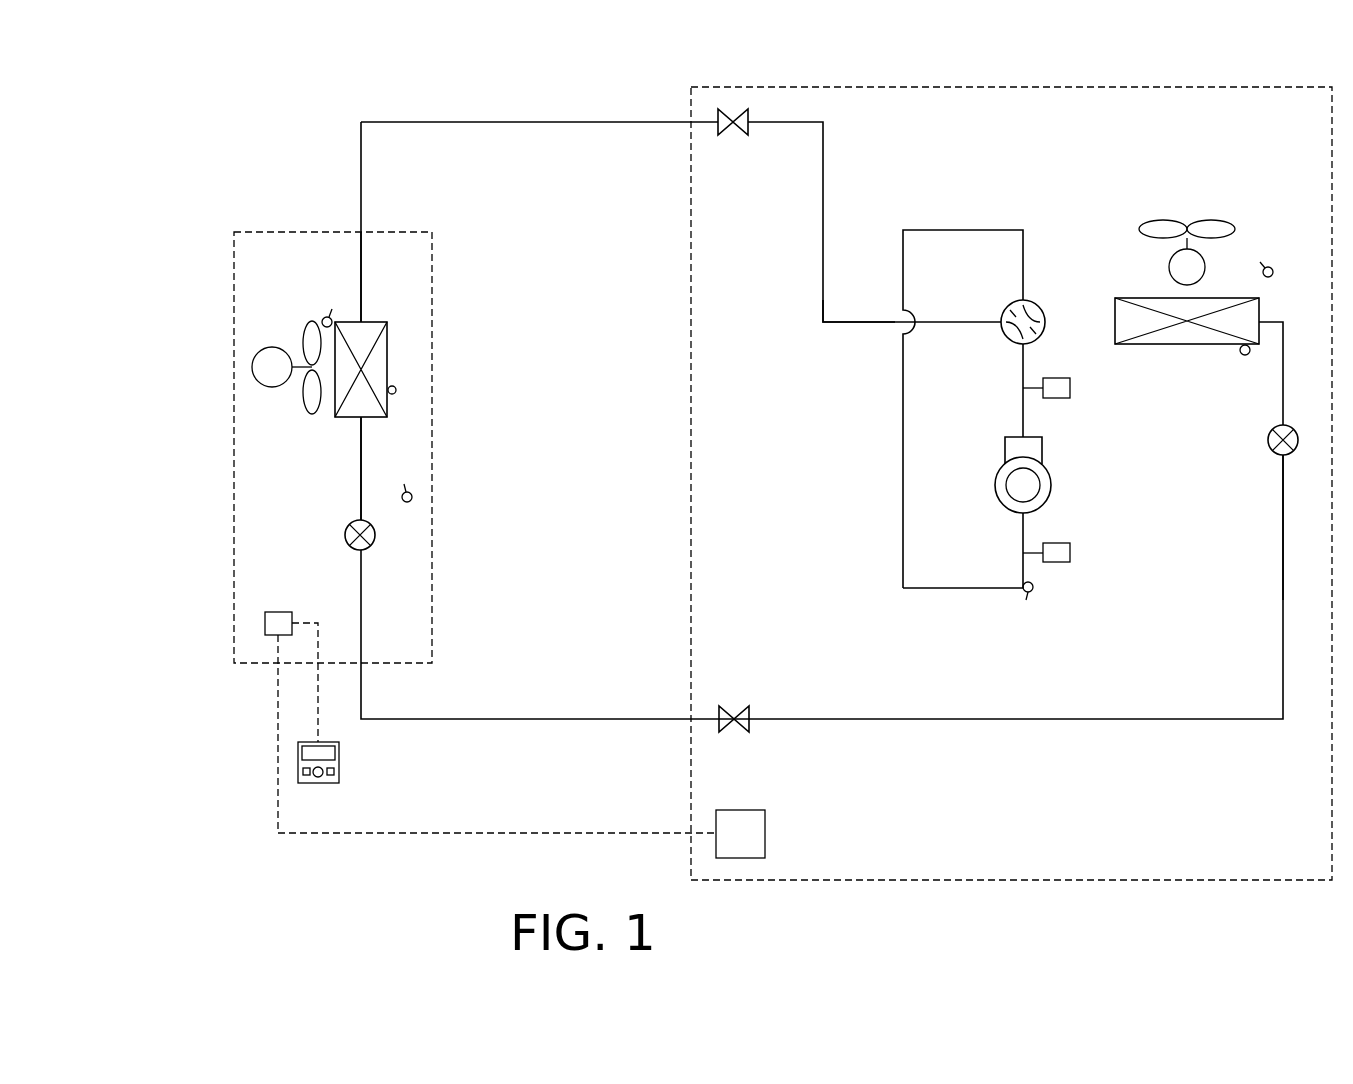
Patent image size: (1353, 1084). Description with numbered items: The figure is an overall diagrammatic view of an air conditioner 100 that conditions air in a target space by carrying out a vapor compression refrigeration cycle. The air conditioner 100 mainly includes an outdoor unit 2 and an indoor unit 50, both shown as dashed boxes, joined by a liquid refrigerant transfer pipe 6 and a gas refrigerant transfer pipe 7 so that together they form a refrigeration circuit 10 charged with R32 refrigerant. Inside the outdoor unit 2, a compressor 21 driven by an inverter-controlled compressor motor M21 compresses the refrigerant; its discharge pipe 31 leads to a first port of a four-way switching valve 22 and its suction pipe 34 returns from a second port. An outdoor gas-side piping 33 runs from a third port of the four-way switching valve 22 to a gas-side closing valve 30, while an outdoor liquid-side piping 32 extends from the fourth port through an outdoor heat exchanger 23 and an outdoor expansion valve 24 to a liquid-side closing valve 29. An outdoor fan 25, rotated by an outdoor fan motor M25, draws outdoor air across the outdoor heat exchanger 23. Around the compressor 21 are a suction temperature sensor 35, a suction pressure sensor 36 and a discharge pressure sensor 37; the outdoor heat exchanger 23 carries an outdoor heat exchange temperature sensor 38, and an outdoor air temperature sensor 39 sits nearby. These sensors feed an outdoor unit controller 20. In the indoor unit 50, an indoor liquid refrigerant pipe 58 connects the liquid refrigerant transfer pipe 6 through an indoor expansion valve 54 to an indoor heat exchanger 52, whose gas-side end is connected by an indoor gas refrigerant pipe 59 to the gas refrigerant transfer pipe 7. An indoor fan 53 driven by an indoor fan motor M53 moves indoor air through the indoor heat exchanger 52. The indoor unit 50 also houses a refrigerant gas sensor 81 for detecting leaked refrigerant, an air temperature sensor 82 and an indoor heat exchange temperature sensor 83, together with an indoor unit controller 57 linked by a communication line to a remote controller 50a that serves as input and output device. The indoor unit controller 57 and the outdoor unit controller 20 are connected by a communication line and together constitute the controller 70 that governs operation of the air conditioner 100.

The air conditioner 100 is at (146, 116).
The outdoor unit 2 is at (689, 865).
The indoor unit 50 is at (308, 229).
The refrigeration circuit 10 is at (822, 381).
The gas refrigerant transfer pipe 7 is at (487, 125).
The liquid refrigerant transfer pipe 6 is at (467, 716).
The gas-side closing valve 30 is at (737, 136).
The liquid-side closing valve 29 is at (735, 705).
The outdoor gas-side piping 33 is at (843, 328).
The outdoor liquid-side piping 32 is at (1278, 526).
The suction pipe 34 is at (899, 491).
The discharge pipe 31 is at (1019, 398).
The four-way switching valve 22 is at (1011, 304).
The outdoor heat exchanger 23 is at (1185, 344).
The outdoor heat exchange temperature sensor 38 is at (1245, 355).
The outdoor fan 25 is at (1139, 226).
The outdoor fan motor M25 is at (1168, 268).
The outdoor air temperature sensor 39 is at (1268, 267).
The discharge pressure sensor 37 is at (1070, 388).
The suction pressure sensor 36 is at (1070, 553).
The suction temperature sensor 35 is at (1033, 585).
The compressor 21 is at (1004, 450).
The compressor motor M21 is at (1051, 487).
The outdoor expansion valve 24 is at (1267, 440).
The indoor heat exchanger 52 is at (372, 320).
The indoor gas refrigerant pipe 59 is at (357, 268).
The indoor liquid refrigerant pipe 58 is at (357, 500).
The indoor fan 53 is at (305, 402).
The indoor fan motor M53 is at (272, 346).
The air temperature sensor 82 is at (337, 299).
The indoor heat exchange temperature sensor 83 is at (396, 390).
The refrigerant gas sensor 81 is at (412, 497).
The indoor expansion valve 54 is at (345, 535).
The indoor unit controller 57 is at (278, 611).
The controller 70 is at (497, 728).
The remote controller 50a is at (316, 784).
The outdoor unit controller 20 is at (765, 833).